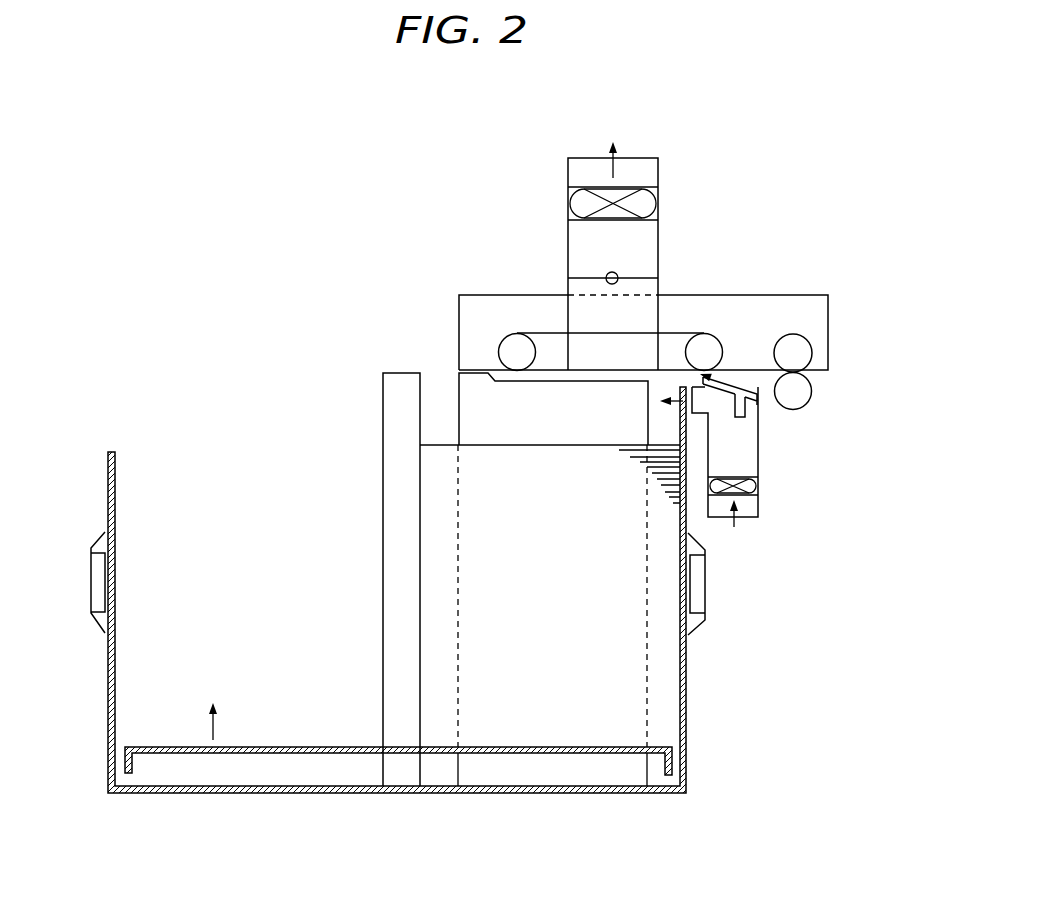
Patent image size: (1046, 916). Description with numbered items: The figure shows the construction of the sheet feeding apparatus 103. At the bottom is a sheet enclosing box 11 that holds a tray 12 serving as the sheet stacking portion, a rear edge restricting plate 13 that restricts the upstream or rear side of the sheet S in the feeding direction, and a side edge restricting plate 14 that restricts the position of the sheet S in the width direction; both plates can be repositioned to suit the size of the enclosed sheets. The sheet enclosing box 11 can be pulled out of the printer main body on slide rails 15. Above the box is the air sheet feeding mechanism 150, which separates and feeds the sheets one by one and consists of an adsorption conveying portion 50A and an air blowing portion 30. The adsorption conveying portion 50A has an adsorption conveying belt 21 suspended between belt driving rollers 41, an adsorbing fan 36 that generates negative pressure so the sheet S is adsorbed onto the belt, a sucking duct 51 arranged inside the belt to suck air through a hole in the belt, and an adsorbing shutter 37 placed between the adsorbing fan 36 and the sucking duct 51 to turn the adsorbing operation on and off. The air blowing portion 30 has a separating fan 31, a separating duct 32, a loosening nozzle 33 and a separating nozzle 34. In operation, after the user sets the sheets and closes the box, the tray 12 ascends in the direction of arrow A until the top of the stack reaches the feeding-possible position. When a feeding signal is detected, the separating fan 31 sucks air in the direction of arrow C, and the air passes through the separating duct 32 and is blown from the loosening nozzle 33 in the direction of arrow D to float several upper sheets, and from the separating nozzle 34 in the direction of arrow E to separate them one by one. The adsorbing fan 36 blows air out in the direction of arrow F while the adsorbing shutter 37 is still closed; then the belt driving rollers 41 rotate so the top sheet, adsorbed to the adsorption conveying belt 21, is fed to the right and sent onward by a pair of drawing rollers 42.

The sheet enclosing box 11 is at (686, 652).
The tray 12 is at (307, 746).
The rear edge restricting plate 13 is at (383, 530).
The side edge restricting plate 14 is at (467, 390).
The slide rails 15 is at (95, 587).
The adsorption conveying belt 21 is at (682, 332).
The air blowing portion 30 is at (772, 452).
The separating fan 31 is at (755, 487).
The separating duct 32 is at (752, 451).
The loosening nozzle 33 is at (707, 402).
The separating nozzle 34 is at (742, 378).
The adsorbing fan 36 is at (652, 206).
The adsorbing shutter 37 is at (645, 278).
The belt driving rollers 41 is at (518, 348).
The pair of drawing rollers 42 is at (807, 400).
The adsorption conveying portion 50A is at (512, 250).
The sucking duct 51 is at (631, 264).
The air sheet feeding mechanism 150 is at (650, 252).
The sheet feeding apparatus 103 is at (650, 252).
The sheet S is at (647, 700).
The arrow A is at (213, 709).
The arrow C is at (741, 523).
The arrow D is at (671, 413).
The arrow E is at (815, 382).
The arrow F is at (620, 164).